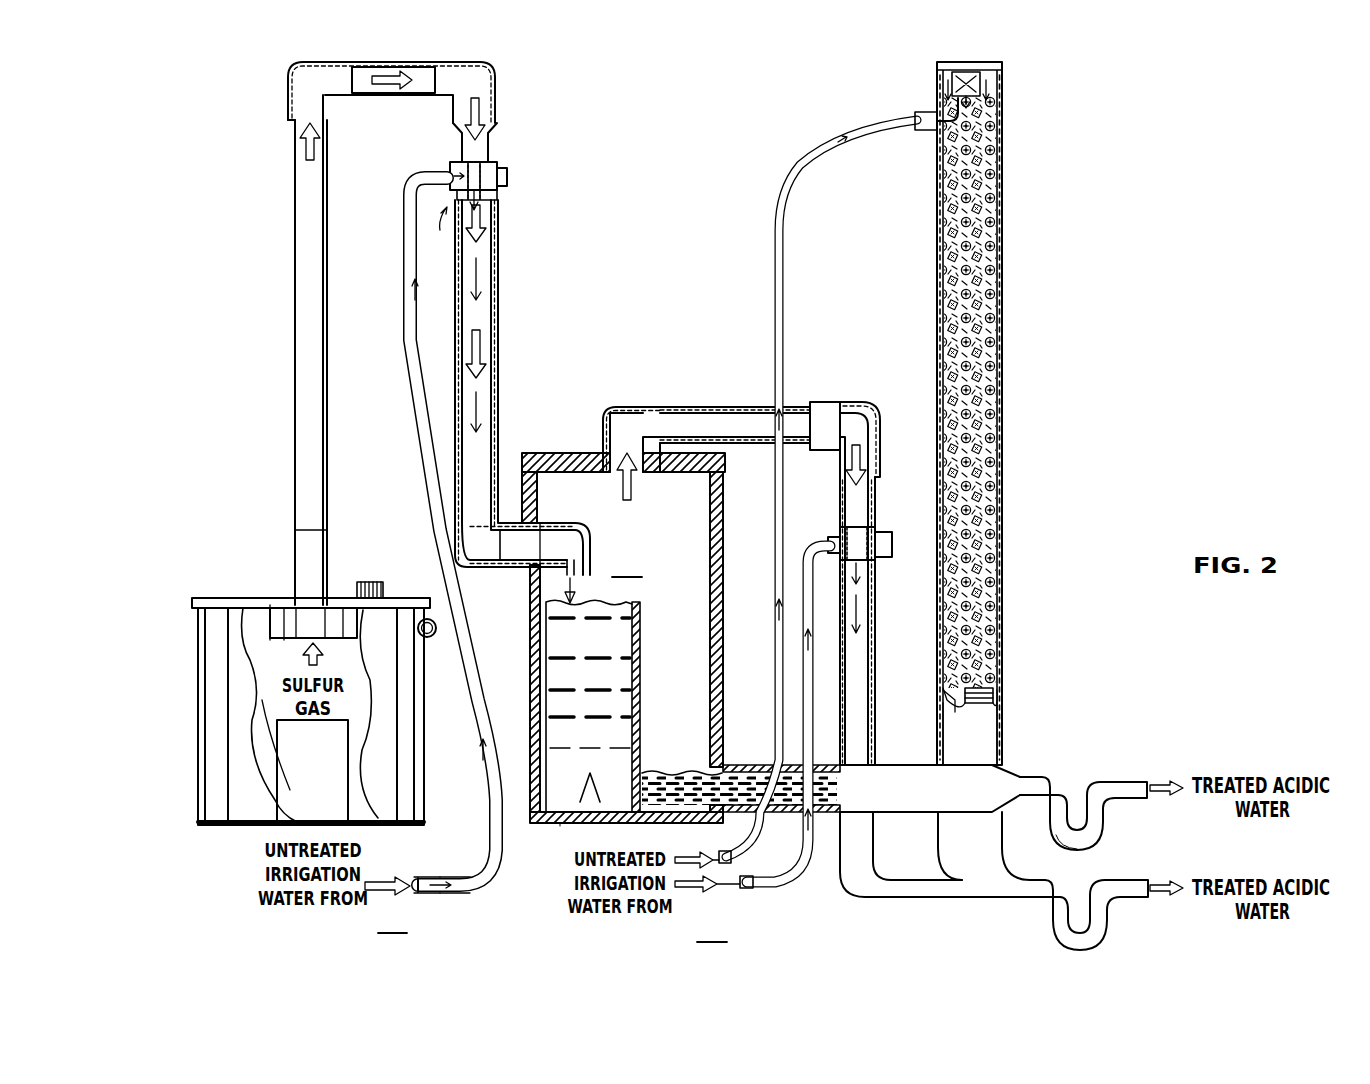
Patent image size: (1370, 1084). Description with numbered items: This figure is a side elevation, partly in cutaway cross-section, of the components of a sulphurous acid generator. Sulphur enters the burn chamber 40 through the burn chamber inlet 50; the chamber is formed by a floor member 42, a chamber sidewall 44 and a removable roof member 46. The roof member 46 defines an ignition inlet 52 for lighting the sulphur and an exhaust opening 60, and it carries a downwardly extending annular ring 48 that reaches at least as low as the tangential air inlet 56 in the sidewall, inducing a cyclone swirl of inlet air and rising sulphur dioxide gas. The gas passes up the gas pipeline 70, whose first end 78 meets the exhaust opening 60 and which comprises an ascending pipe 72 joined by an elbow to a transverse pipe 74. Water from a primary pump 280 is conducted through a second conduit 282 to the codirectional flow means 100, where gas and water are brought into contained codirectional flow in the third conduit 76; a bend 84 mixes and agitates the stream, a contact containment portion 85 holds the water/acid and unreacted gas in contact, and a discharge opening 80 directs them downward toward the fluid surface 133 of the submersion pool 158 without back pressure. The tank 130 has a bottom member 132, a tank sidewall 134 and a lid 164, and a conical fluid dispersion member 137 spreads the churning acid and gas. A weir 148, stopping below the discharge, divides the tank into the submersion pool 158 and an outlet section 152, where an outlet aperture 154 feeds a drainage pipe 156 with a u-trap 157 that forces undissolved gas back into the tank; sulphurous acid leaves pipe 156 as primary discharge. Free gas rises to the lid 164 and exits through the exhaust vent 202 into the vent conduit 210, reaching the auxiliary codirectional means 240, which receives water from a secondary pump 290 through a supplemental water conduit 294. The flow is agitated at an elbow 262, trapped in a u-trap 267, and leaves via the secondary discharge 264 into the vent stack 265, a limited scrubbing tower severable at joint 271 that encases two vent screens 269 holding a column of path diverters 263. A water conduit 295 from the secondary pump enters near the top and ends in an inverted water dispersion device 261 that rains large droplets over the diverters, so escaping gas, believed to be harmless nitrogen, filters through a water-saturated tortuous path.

The burn chamber 40 is at (263, 668).
The floor member 42 is at (330, 815).
The chamber sidewall 44 is at (398, 752).
The roof member 46 is at (278, 620).
The annular ring 48 is at (262, 673).
The burn chamber inlet 50 is at (287, 748).
The ignition inlet 52 is at (378, 580).
The air inlet 56 is at (430, 638).
The exhaust opening 60 is at (322, 595).
The gas pipeline 70 is at (362, 96).
The ascending pipe 72 is at (300, 308).
The transverse pipe 74 is at (384, 95).
The third conduit 76 is at (485, 293).
The first end of gas pipeline 78 is at (318, 528).
The discharge opening 80 is at (530, 662).
The bend 84 is at (467, 567).
The contact containment portion 85 is at (502, 560).
The codirectional flow means 100 is at (443, 206).
The tank 130 is at (627, 515).
The bottom member 132 is at (578, 823).
The fluid surface 133 is at (630, 600).
The tank sidewall 134 is at (471, 888).
The fluid dispersion member 137 is at (588, 782).
The weir 148 is at (640, 720).
The outlet section 152 is at (696, 815).
The outlet aperture 154 is at (717, 783).
The drainage pipe 156 is at (1057, 782).
The u-trap 157 is at (1093, 838).
The submersion pool 158 is at (550, 782).
The lid 164 is at (566, 452).
The exhaust vent 202 is at (614, 450).
The vent conduit 210 is at (722, 418).
The auxiliary codirectional flow means 240 is at (872, 527).
The water dispersion device 261 is at (937, 72).
The elbow 262 is at (858, 890).
The path diverters 263 is at (1000, 292).
The secondary discharge 264 is at (1017, 892).
The vent stack 265 is at (1003, 185).
The u-trap 267 is at (1105, 924).
The vent screens 269 is at (1002, 705).
The joint 271 is at (945, 712).
The primary pump 280 is at (315, 922).
The second conduit 282 is at (445, 877).
The secondary pump 290 is at (622, 931).
The supplemental water conduit 294 is at (772, 883).
The water conduit 295 is at (777, 578).